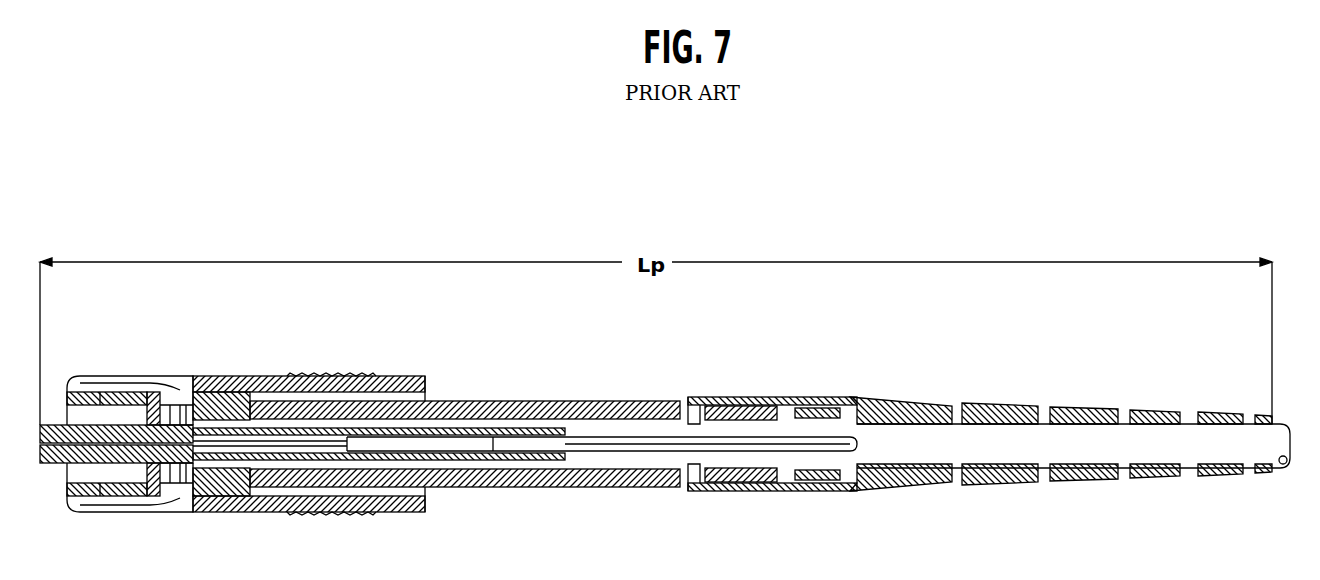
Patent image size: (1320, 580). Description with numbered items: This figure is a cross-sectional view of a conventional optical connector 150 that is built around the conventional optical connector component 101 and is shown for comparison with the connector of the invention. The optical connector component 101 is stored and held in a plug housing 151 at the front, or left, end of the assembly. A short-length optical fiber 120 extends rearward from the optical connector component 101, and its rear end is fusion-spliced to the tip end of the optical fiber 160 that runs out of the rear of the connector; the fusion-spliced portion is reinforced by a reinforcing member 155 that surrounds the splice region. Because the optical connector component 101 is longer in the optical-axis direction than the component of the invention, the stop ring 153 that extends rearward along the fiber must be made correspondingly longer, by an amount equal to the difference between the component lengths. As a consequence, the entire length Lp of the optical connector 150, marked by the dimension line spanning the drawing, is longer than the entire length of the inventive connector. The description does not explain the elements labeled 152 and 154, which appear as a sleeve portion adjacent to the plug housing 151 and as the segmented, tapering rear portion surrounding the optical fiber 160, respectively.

The optical connector 150 is at (797, 192).
The optical connector component 101 is at (110, 463).
The plug housing 151 is at (193, 374).
The coupling sleeve 152 is at (222, 376).
The short-length optical fiber 120 is at (307, 460).
The stop ring 153 is at (553, 401).
The reinforcing member 155 is at (453, 428).
The optical fiber 160 is at (645, 453).
The boot 154 is at (933, 397).